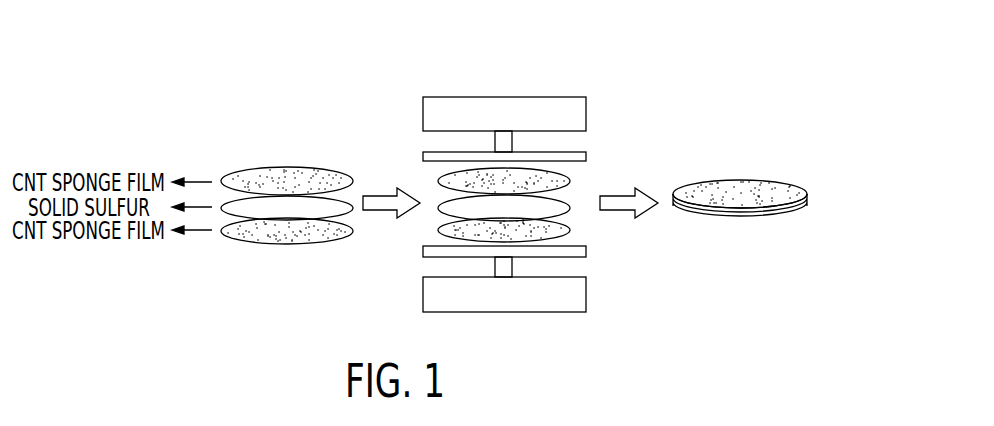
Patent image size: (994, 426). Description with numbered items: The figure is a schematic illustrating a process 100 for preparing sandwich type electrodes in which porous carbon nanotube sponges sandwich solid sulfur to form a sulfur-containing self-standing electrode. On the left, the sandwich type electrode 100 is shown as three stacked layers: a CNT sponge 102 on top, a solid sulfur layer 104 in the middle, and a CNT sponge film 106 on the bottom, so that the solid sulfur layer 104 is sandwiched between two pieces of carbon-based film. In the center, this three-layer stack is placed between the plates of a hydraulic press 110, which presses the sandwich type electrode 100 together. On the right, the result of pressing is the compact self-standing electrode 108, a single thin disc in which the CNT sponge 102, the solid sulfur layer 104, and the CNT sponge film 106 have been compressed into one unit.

The sandwich type electrode 100 is at (180, 83).
The CNT sponge 102 is at (295, 167).
The solid sulfur layer 104 is at (350, 215).
The CNT sponge film 106 is at (290, 243).
The compact self-standing electrode 108 is at (739, 172).
The hydraulic press 110 is at (548, 97).